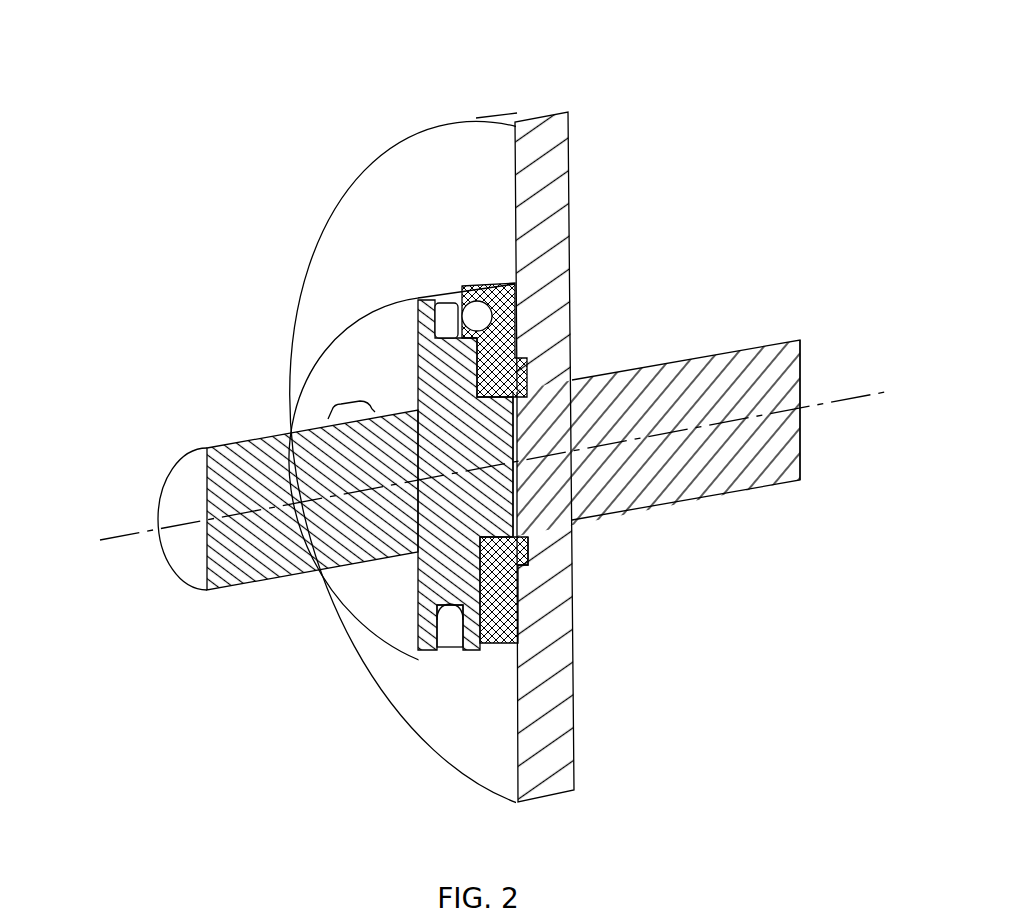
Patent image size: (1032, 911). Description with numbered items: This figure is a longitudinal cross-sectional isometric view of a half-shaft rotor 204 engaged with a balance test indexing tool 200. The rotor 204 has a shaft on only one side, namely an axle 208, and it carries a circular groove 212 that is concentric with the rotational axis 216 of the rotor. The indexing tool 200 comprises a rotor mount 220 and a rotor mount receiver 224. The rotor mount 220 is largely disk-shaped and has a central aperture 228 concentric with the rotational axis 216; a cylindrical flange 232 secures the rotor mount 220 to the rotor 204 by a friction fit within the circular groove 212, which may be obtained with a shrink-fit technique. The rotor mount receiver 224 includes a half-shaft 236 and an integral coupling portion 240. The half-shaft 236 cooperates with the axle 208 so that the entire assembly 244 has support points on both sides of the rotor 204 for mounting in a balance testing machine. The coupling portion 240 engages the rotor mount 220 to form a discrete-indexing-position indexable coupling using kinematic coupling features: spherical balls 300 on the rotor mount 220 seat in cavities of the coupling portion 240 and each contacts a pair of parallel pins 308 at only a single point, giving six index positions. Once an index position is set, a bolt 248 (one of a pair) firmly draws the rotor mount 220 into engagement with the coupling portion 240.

The balance test indexing tool 200 is at (324, 315).
The half-shaft rotor 204 is at (491, 152).
The axle 208 is at (747, 487).
The circular groove 212 is at (507, 297).
The rotational axis 216 is at (836, 392).
The rotor mount 220 is at (500, 660).
The rotor mount receiver 224 is at (389, 656).
The central aperture 228 is at (492, 537).
The cylindrical flange 232 is at (518, 565).
The half-shaft 236 is at (251, 430).
The coupling portion 240 is at (377, 300).
The assembly 244 is at (672, 156).
The bolt 248 is at (353, 407).
The spherical ball 300 is at (447, 297).
The pin 308 is at (430, 300).